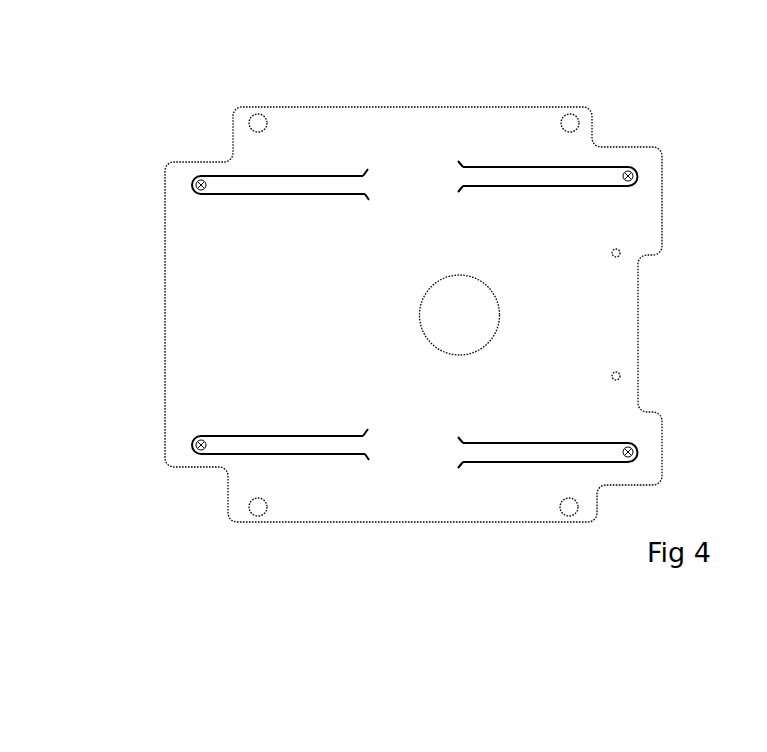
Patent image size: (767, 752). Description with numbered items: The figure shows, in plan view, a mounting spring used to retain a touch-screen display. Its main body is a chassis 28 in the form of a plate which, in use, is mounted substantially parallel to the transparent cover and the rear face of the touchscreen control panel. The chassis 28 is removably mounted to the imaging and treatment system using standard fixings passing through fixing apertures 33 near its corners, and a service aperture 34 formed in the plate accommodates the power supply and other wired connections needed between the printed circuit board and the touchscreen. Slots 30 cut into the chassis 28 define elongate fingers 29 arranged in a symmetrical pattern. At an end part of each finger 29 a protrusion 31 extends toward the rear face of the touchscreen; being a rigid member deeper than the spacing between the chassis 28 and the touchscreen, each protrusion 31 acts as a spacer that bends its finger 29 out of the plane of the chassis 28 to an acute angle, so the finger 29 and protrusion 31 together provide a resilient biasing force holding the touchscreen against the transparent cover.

The chassis 28 is at (352, 520).
The finger 29 is at (292, 185).
The slot 30 is at (519, 463).
The protrusion 31 is at (632, 452).
The fixing aperture 33 is at (573, 121).
The service aperture 34 is at (489, 317).